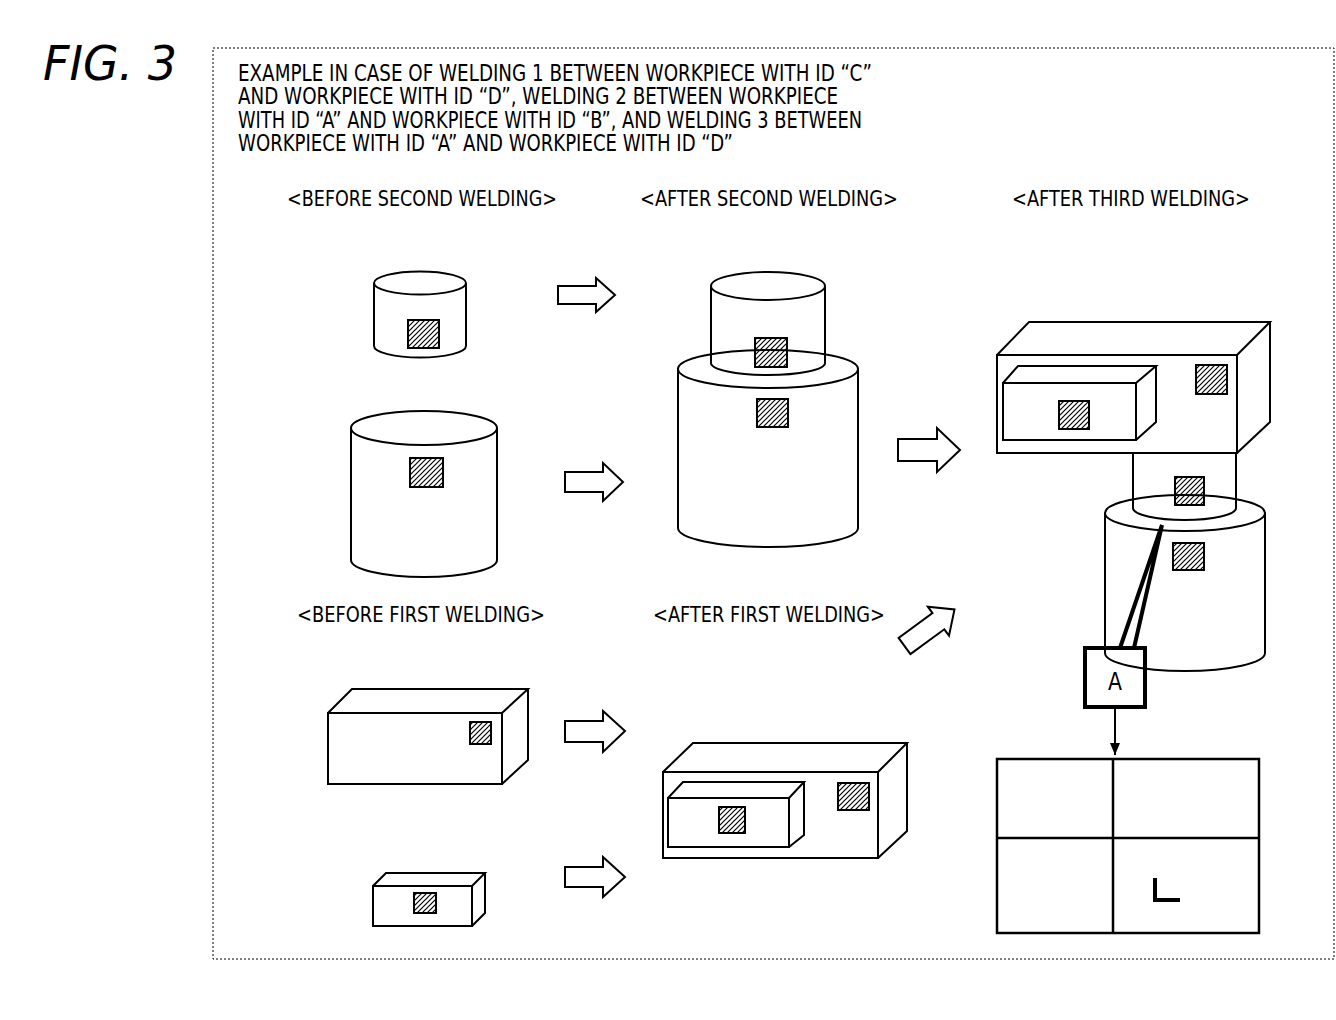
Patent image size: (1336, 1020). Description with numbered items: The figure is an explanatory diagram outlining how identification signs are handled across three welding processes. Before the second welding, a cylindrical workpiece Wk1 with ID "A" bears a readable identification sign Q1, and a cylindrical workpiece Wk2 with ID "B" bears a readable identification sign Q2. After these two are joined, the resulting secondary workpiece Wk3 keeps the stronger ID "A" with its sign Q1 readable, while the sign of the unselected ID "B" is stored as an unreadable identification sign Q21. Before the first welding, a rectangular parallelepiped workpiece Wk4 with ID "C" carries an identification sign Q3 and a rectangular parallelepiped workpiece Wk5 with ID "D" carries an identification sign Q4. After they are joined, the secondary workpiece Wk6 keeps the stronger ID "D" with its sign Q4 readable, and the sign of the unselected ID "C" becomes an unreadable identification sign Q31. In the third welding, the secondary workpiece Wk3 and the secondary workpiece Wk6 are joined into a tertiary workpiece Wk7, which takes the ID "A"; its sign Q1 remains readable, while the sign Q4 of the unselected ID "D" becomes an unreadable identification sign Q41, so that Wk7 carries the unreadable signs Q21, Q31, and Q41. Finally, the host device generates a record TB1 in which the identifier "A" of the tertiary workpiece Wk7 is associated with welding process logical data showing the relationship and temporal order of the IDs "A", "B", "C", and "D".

The workpiece Wk1 is at (351, 280).
The workpiece Wk2 is at (345, 404).
The secondary workpiece Wk3 is at (838, 275).
The workpiece Wk4 is at (336, 685).
The workpiece Wk5 is at (365, 872).
The secondary workpiece Wk6 is at (716, 727).
The tertiary workpiece Wk7 is at (1245, 293).
The identification sign Q1 is at (439, 334).
The identification sign Q2 is at (443, 472).
The identification sign Q3 is at (482, 744).
The identification sign Q4 is at (430, 913).
The unreadable identification sign Q21 is at (788, 413).
The unreadable identification sign Q31 is at (848, 783).
The unreadable identification sign Q41 is at (1073, 429).
The record TB1 is at (1218, 749).